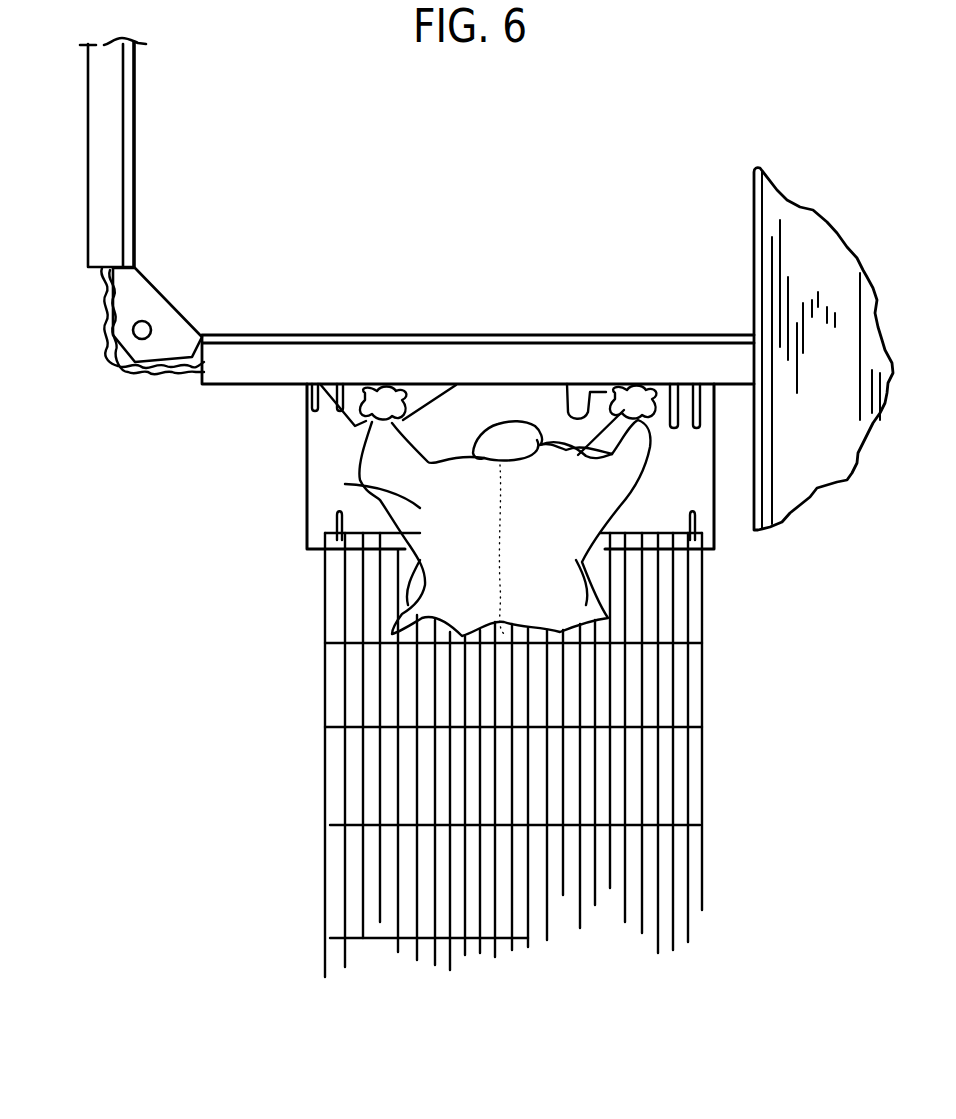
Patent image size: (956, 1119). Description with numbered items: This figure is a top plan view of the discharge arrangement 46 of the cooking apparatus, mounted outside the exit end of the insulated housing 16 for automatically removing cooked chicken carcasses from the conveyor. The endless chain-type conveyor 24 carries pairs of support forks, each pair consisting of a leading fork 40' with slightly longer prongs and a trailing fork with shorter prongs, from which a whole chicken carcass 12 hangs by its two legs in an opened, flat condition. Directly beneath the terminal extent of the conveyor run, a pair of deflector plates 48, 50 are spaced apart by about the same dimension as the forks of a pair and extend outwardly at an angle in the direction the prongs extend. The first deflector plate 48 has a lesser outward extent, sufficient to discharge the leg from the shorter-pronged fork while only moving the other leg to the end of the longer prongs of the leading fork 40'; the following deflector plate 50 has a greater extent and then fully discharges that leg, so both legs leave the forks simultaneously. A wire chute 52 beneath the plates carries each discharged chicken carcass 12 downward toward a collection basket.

The chicken carcass 12 is at (345, 484).
The insulated housing 16 is at (804, 468).
The endless chain-type conveyor 24 is at (106, 296).
The leading support fork 40' is at (535, 355).
The discharge arrangement 46 is at (550, 378).
The first deflector plate 48 is at (581, 420).
The following deflector plate 50 is at (353, 430).
The wire chute 52 is at (336, 789).